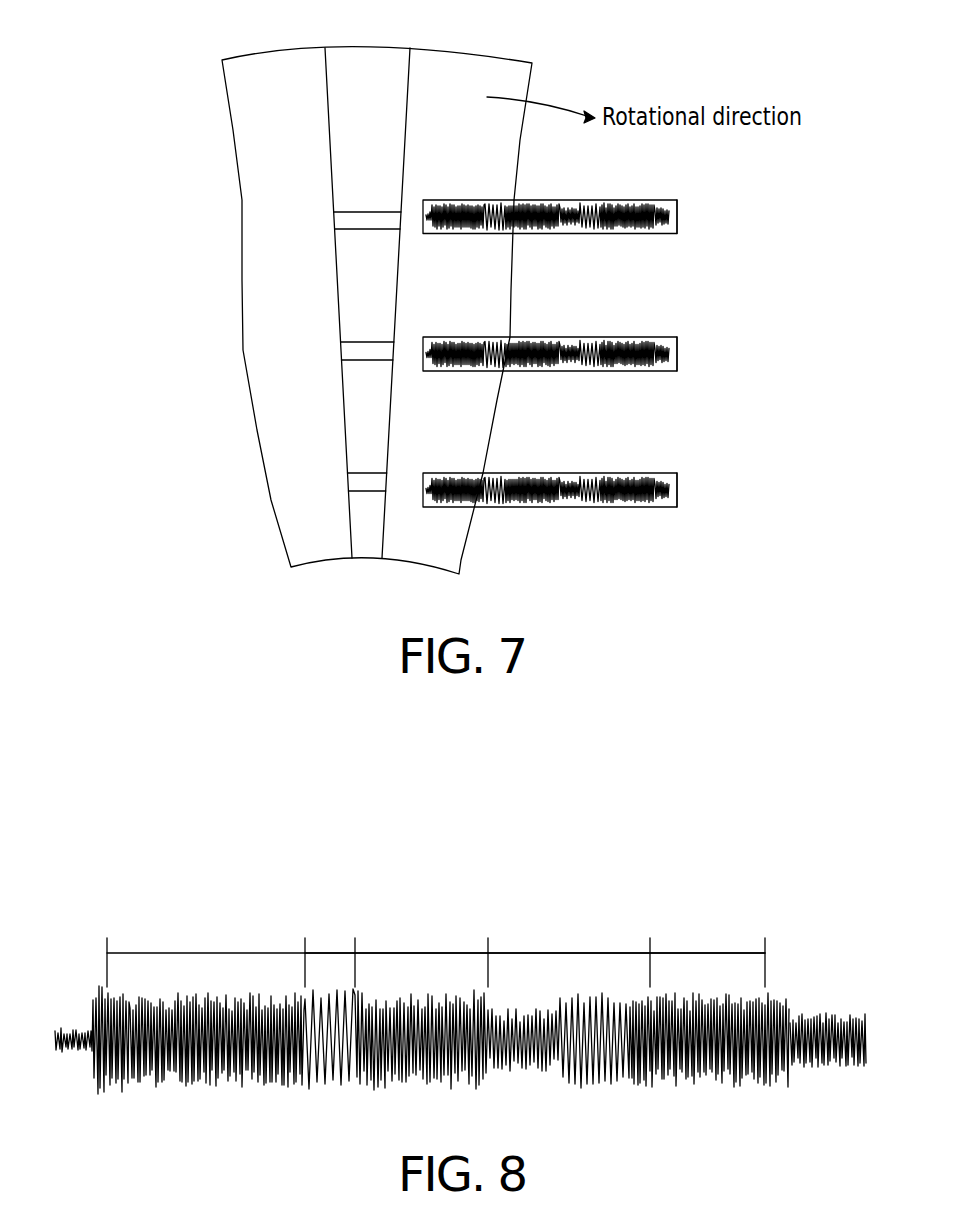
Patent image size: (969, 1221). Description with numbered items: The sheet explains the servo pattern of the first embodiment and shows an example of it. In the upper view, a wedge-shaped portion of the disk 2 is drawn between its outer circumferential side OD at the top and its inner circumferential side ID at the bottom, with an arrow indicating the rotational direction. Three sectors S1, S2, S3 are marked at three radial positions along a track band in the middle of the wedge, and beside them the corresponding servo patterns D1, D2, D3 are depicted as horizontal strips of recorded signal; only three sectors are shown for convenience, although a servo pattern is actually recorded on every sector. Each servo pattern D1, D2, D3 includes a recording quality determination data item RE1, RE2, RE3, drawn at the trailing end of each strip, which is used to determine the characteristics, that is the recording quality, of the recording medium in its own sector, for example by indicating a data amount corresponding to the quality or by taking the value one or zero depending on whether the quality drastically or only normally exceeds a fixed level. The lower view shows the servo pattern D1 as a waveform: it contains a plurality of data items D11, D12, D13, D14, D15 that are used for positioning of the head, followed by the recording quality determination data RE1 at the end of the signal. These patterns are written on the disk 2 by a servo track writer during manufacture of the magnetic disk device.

In FIG. 7, the disk 2 is at (490, 54).
In FIG. 7, the outer circumferential side OD is at (366, 31).
In FIG. 7, the inner circumferential side ID is at (366, 584).
In FIG. 7, the sector S1 is at (347, 482).
In FIG. 7, the sector S2 is at (343, 352).
In FIG. 7, the sector S3 is at (343, 223).
In FIG. 7, the servo pattern D1 is at (655, 473).
In FIG. 8, the servo pattern D1 is at (460, 1021).
In FIG. 7, the servo pattern D2 is at (655, 337).
In FIG. 7, the servo pattern D3 is at (655, 200).
In FIG. 7, the recording quality determination data RE1 is at (668, 504).
In FIG. 8, the recording quality determination data RE1 is at (807, 1072).
In FIG. 7, the recording quality determination data RE2 is at (668, 368).
In FIG. 7, the recording quality determination data RE3 is at (668, 230).
In FIG. 8, the data item D11 is at (206, 954).
In FIG. 8, the data item D12 is at (330, 954).
In FIG. 8, the data item D13 is at (421, 954).
In FIG. 8, the data item D14 is at (569, 954).
In FIG. 8, the data item D15 is at (707, 954).